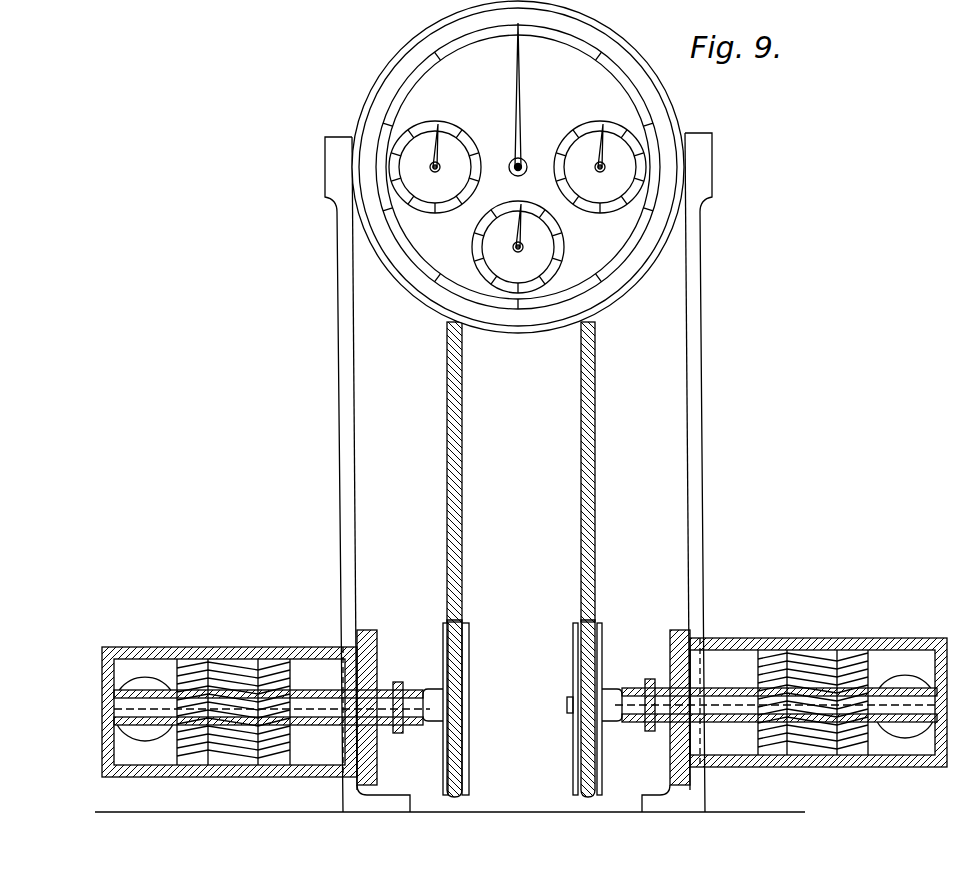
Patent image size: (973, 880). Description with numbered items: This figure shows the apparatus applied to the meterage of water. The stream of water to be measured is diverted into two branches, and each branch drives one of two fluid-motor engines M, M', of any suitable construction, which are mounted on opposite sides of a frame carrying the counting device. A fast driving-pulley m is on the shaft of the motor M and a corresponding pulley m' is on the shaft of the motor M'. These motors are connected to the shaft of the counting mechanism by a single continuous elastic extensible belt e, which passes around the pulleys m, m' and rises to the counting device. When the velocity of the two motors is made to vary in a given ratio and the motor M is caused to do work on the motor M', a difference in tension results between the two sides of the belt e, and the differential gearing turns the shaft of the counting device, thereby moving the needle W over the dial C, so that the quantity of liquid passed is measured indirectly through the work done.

The needle W is at (517, 68).
The dial-plate C is at (518, 167).
The elastic extensible belt e is at (530, 472).
The fluid-motor engine M' is at (266, 701).
The fluid-motor engine M is at (781, 692).
The driving-pulley m' is at (462, 708).
The fast driving-pulley m is at (598, 708).